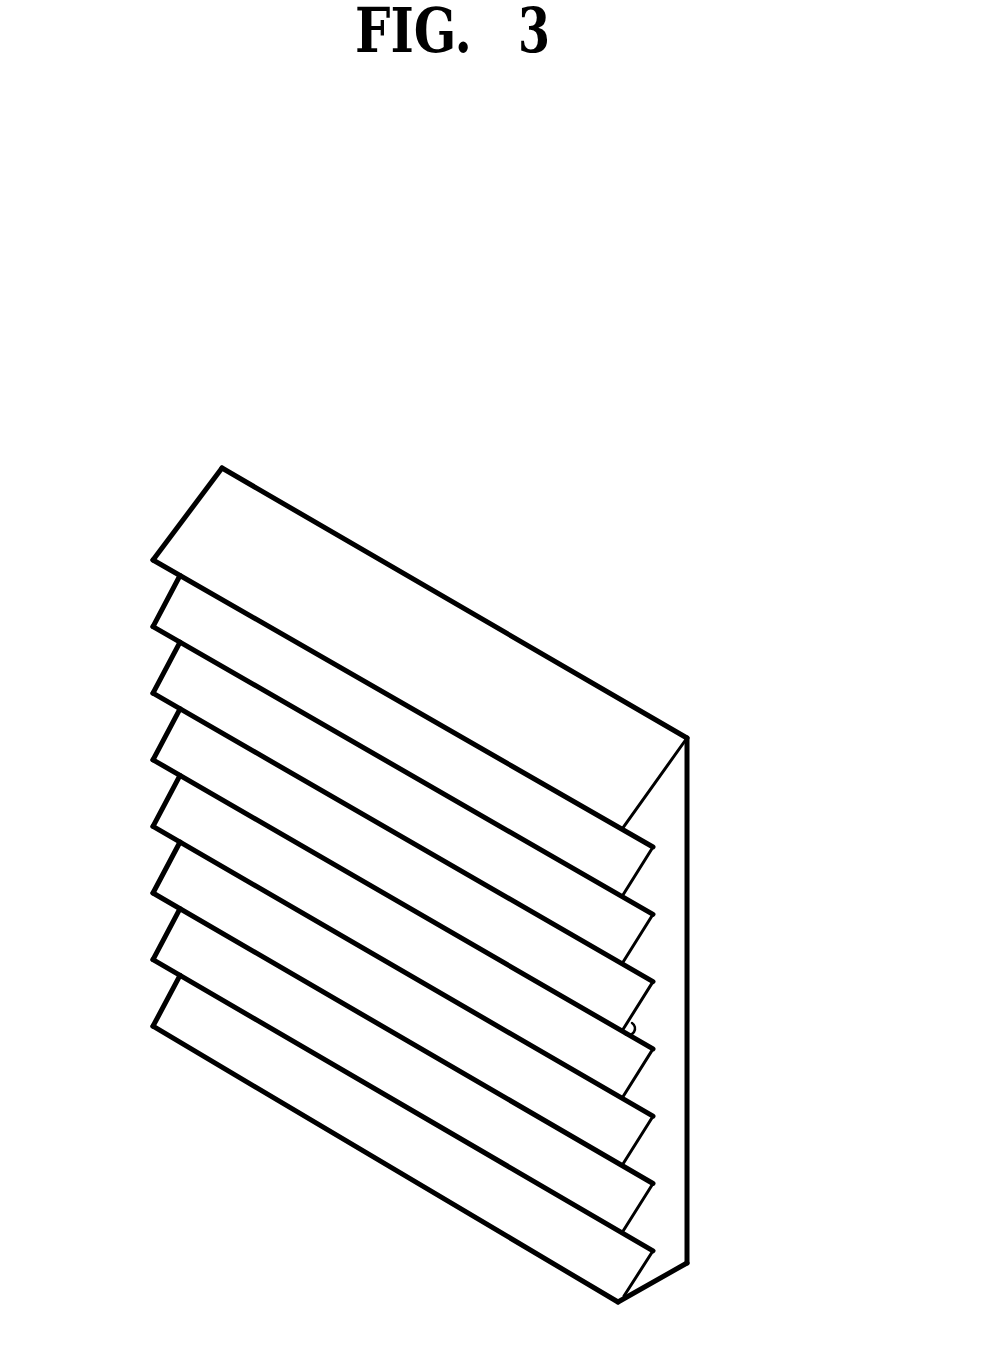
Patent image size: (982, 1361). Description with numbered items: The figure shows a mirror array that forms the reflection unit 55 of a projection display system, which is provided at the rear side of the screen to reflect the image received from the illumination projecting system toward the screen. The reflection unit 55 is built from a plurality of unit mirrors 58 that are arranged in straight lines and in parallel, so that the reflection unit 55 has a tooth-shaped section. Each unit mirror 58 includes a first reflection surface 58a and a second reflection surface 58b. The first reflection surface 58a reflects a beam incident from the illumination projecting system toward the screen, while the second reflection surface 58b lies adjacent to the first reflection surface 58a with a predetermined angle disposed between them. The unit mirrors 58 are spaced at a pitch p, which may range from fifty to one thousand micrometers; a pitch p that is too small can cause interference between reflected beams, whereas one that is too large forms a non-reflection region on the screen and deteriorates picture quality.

The reflection unit 55 is at (176, 487).
The unit mirror 58 is at (207, 762).
The first reflection surface 58a is at (640, 905).
The second reflection surface 58b is at (638, 875).
The pitch p is at (653, 1116).